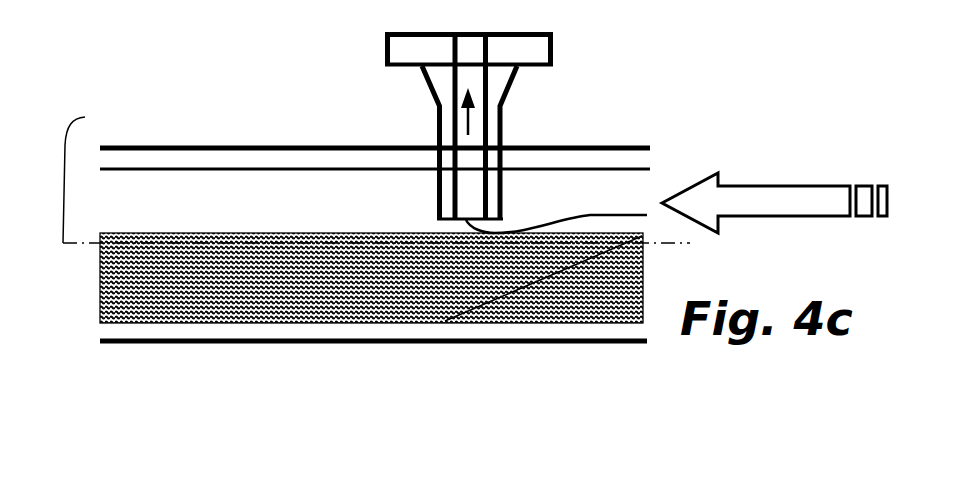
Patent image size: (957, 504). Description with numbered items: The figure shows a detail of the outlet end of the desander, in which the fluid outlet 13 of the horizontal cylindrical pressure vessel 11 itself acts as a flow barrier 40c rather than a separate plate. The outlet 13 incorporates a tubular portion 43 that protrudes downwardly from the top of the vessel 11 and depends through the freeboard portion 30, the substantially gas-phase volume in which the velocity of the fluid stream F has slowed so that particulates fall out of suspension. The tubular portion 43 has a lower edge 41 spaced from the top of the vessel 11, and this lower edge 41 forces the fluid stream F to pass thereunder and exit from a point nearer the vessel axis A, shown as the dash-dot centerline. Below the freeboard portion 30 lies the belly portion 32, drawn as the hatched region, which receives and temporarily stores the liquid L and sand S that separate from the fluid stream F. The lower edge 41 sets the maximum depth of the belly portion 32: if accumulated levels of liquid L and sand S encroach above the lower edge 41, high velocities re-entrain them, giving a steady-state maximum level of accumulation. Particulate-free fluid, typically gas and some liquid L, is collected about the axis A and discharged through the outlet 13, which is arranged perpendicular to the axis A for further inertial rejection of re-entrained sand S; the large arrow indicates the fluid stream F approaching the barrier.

The pressure vessel 11 is at (278, 147).
The fluid outlet 13 is at (491, 122).
The freeboard portion 30 is at (239, 219).
The belly portion 32 is at (304, 311).
The flow barrier 40c is at (587, 133).
The tubular portion 43 is at (587, 133).
The lower edge 41 is at (500, 187).
The vessel axis A is at (376, 169).
The fluid stream F is at (612, 214).
The liquid L is at (153, 278).
The sand S is at (600, 280).